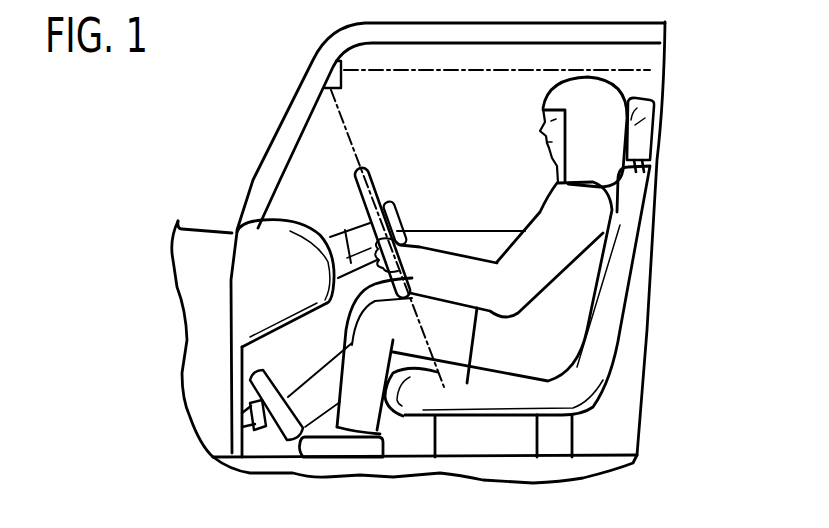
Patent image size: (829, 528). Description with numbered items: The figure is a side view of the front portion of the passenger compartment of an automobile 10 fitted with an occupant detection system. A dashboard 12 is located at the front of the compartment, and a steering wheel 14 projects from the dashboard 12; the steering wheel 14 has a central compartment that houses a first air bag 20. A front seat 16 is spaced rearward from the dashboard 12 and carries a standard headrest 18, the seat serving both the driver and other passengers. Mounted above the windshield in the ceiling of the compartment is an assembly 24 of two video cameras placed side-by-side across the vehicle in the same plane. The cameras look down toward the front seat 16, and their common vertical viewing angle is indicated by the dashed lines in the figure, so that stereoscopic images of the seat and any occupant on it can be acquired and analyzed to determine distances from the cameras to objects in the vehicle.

The automobile 10 is at (274, 106).
The dashboard 12 is at (294, 288).
The steering wheel 14 is at (292, 325).
The front seat 16 is at (617, 275).
The headrest 18 is at (645, 120).
The first air bag 20 is at (399, 218).
The assembly 24 is at (332, 71).